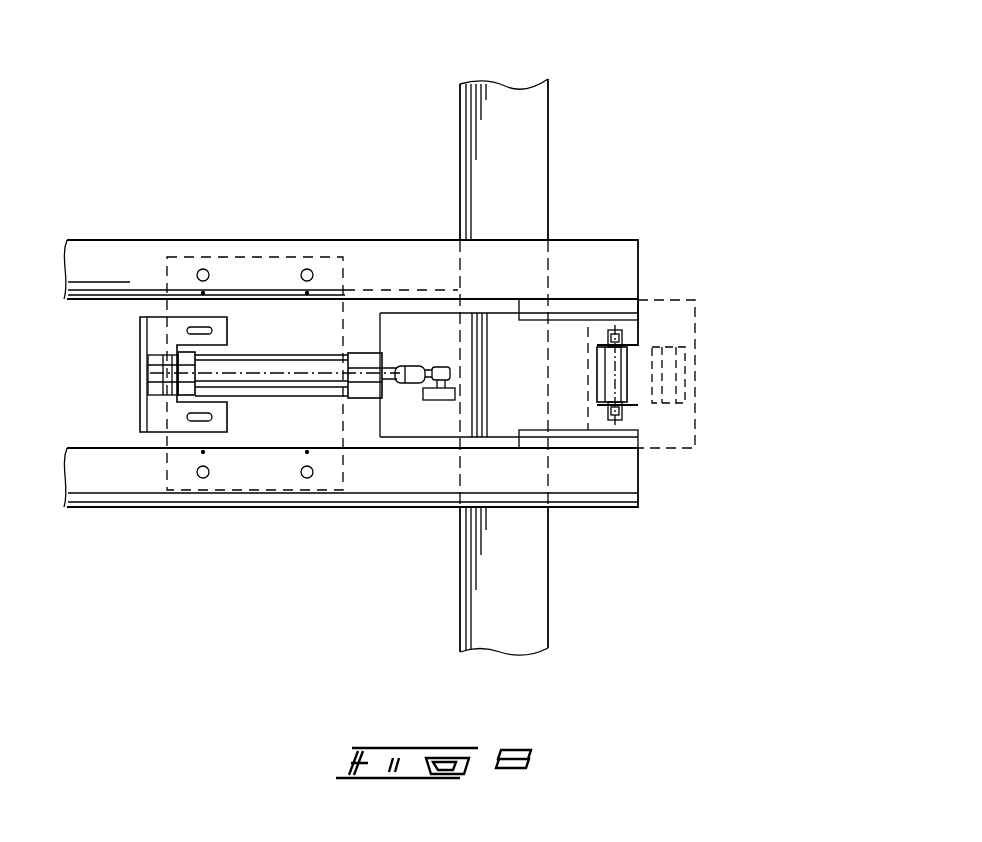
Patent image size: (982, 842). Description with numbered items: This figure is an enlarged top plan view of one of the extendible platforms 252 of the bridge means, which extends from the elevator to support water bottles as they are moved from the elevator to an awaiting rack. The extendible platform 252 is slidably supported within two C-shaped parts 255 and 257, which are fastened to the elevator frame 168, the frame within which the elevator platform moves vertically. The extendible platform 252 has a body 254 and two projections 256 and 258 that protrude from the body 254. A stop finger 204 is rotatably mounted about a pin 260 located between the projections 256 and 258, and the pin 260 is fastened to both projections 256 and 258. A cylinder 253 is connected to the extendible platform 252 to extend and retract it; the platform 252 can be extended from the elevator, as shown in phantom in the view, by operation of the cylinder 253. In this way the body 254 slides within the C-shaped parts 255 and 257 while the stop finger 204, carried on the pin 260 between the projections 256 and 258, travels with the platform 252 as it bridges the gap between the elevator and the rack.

The elevator frame 168 is at (540, 623).
The extendible platform 252 is at (449, 357).
The cylinder 253 is at (275, 373).
The body 254 is at (413, 425).
The C-shaped part 255 is at (623, 303).
The projection 256 is at (595, 327).
The C-shaped part 257 is at (620, 445).
The projection 258 is at (597, 420).
The pin 260 is at (628, 362).
The stop finger 204 is at (677, 382).